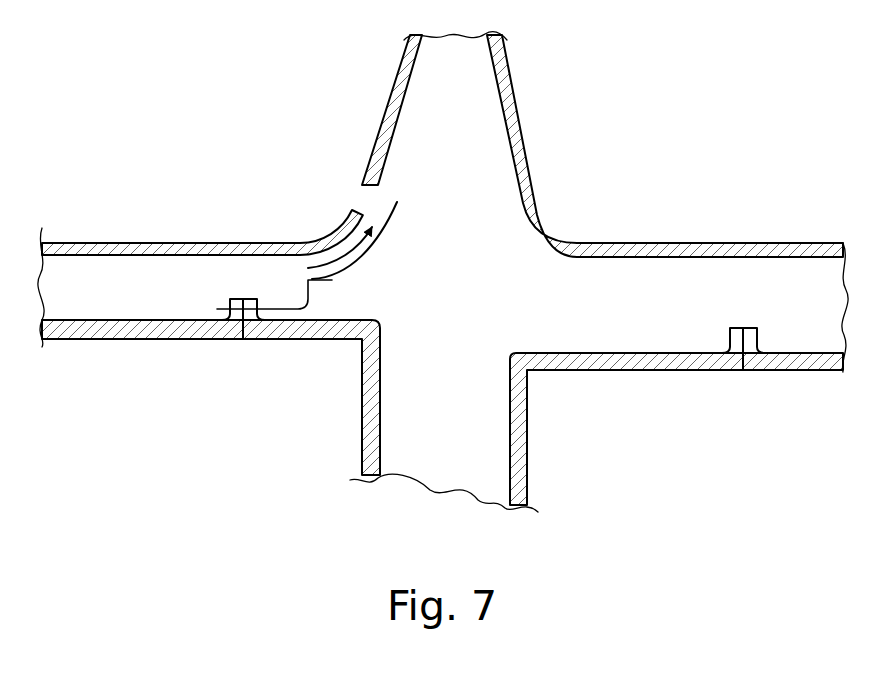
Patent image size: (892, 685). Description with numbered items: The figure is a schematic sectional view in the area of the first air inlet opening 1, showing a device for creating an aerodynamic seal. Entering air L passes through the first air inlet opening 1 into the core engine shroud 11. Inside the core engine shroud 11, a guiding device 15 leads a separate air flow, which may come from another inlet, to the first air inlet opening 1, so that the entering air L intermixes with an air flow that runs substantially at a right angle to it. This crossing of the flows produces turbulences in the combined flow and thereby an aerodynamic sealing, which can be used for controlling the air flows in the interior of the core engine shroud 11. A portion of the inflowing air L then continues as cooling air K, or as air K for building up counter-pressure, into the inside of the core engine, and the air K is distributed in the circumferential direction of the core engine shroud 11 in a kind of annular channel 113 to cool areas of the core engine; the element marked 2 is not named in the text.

The annular channel 113 is at (443, 272).
The first air inlet opening 1 is at (353, 202).
The inlet duct 2 is at (510, 100).
The core engine shroud 11 is at (220, 268).
The guiding device 15 is at (373, 249).
The entering air L is at (382, 198).
The cooling air K is at (437, 283).